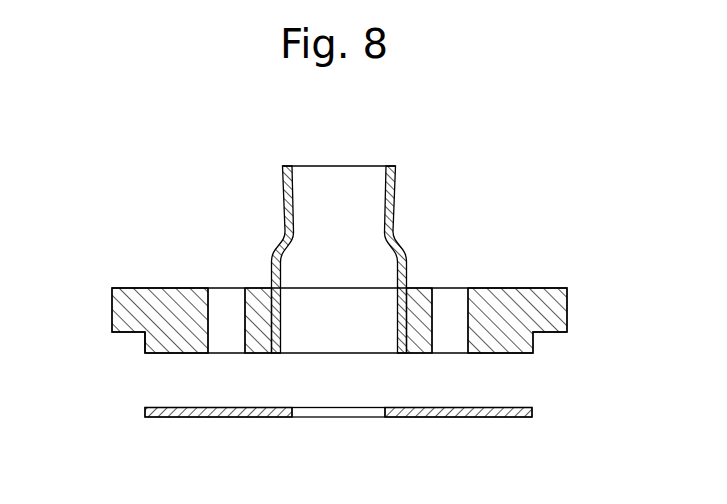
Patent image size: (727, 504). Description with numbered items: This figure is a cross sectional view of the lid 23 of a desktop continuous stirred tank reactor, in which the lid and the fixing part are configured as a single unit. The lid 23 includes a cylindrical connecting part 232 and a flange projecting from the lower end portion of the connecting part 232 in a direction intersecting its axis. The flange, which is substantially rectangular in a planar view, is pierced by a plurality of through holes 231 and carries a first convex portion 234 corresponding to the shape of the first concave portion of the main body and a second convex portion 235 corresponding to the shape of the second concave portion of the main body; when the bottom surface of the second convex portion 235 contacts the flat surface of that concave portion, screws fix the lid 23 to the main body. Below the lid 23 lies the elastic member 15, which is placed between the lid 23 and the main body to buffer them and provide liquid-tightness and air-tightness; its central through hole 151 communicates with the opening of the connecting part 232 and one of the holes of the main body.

The lid 23 is at (567, 288).
The through holes 231 is at (245, 288).
The cylindrical connecting part 232 is at (283, 195).
The first convex portion 234 is at (112, 332).
The second convex portion 235 is at (145, 353).
The elastic member 15 is at (532, 407).
The through hole 151 is at (292, 418).